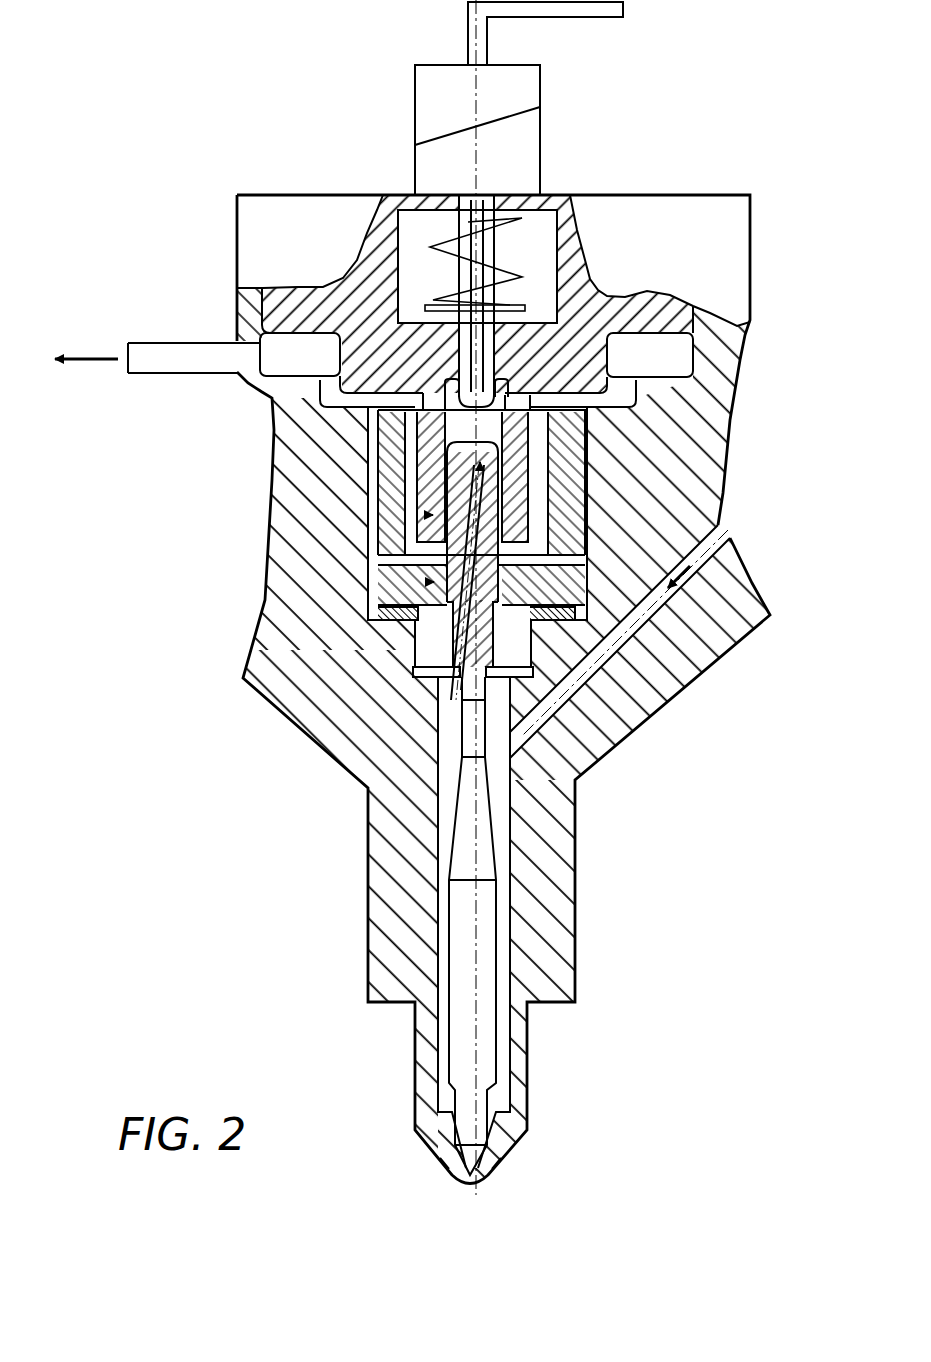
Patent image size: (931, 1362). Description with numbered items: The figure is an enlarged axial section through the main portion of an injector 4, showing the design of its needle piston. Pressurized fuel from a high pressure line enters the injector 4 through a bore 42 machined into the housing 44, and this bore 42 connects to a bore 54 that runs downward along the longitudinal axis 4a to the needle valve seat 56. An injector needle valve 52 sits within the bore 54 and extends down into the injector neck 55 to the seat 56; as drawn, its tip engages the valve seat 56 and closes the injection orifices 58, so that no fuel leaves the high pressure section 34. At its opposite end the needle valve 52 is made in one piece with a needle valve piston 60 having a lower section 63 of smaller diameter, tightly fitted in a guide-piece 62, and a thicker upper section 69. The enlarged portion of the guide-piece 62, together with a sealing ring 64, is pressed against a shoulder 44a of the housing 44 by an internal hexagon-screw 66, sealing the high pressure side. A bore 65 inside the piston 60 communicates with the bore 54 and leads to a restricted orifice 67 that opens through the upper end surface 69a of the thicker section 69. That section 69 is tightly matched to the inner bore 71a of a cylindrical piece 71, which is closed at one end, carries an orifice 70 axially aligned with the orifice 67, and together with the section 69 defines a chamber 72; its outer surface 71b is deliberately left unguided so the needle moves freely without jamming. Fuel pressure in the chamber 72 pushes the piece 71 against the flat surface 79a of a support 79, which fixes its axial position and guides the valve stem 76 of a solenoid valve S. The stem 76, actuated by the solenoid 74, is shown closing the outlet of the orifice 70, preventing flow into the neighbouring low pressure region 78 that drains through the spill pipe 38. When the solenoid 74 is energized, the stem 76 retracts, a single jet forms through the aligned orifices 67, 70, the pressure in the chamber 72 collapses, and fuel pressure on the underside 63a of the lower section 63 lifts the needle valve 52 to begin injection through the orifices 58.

The injector 4 is at (256, 882).
The longitudinal axis 4a is at (482, 172).
The solenoid valve S is at (402, 181).
The solenoid 74 is at (428, 103).
The valve stem 76 is at (467, 222).
The low pressure region 78 is at (502, 213).
The low pressure spill pipe 38 is at (182, 352).
The support 79 is at (322, 395).
The flat surface 79a is at (426, 396).
The upper end surface 69a is at (524, 395).
The orifice 70 is at (368, 428).
The cylindrical piece 71 is at (432, 447).
The internal hexagon-screw 66 is at (391, 470).
The chamber 72 is at (410, 492).
The inner bore 71a is at (440, 522).
The needle valve piston 60 is at (410, 558).
The guide-piece 62 is at (392, 590).
The sealing ring 64 is at (385, 613).
The shoulder 44a is at (418, 625).
The high pressure section 34 is at (436, 797).
The bore 54 is at (498, 830).
The injector needle valve 52 is at (484, 942).
The injector neck 55 is at (525, 1068).
The needle valve seat 56 is at (518, 1132).
The injection orifices 58 is at (445, 1163).
The lower section 63 is at (500, 592).
The underside 63a is at (512, 752).
The bore 65 is at (520, 530).
The outer surface 71b is at (535, 500).
The upper section 69 is at (540, 478).
The restricted orifice 67 is at (560, 447).
The bore 42 is at (718, 535).
The housing 44 is at (677, 683).